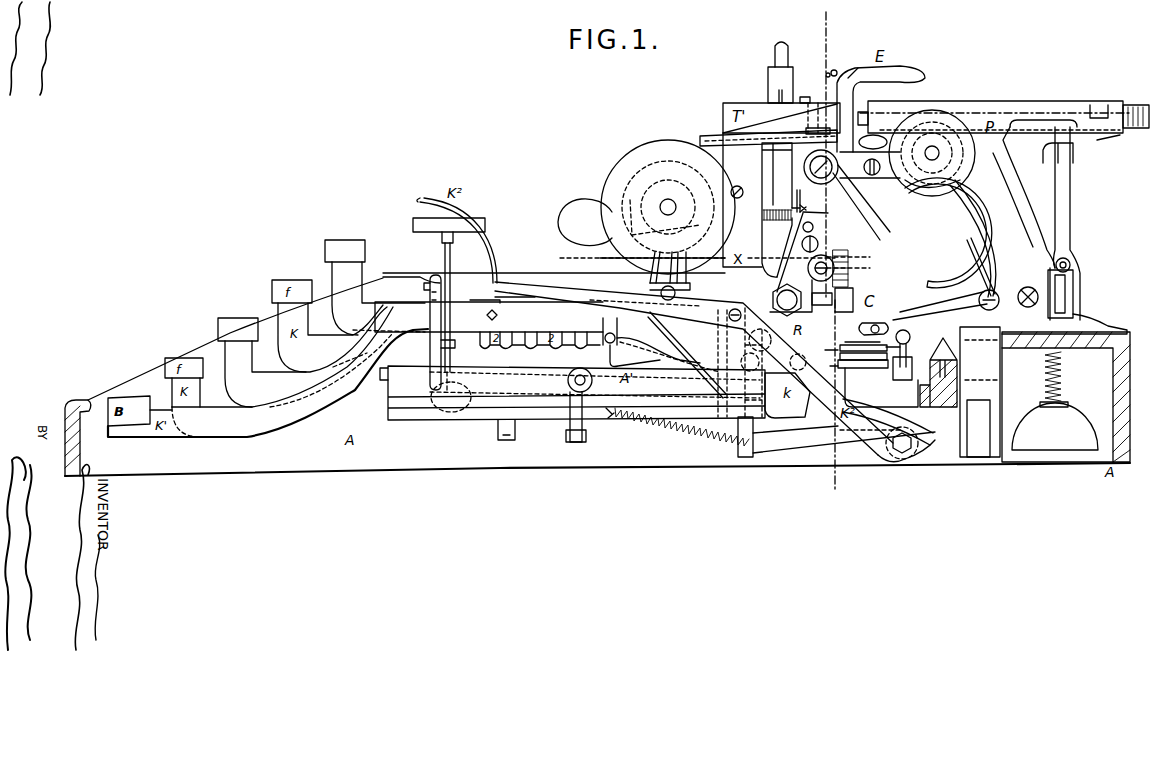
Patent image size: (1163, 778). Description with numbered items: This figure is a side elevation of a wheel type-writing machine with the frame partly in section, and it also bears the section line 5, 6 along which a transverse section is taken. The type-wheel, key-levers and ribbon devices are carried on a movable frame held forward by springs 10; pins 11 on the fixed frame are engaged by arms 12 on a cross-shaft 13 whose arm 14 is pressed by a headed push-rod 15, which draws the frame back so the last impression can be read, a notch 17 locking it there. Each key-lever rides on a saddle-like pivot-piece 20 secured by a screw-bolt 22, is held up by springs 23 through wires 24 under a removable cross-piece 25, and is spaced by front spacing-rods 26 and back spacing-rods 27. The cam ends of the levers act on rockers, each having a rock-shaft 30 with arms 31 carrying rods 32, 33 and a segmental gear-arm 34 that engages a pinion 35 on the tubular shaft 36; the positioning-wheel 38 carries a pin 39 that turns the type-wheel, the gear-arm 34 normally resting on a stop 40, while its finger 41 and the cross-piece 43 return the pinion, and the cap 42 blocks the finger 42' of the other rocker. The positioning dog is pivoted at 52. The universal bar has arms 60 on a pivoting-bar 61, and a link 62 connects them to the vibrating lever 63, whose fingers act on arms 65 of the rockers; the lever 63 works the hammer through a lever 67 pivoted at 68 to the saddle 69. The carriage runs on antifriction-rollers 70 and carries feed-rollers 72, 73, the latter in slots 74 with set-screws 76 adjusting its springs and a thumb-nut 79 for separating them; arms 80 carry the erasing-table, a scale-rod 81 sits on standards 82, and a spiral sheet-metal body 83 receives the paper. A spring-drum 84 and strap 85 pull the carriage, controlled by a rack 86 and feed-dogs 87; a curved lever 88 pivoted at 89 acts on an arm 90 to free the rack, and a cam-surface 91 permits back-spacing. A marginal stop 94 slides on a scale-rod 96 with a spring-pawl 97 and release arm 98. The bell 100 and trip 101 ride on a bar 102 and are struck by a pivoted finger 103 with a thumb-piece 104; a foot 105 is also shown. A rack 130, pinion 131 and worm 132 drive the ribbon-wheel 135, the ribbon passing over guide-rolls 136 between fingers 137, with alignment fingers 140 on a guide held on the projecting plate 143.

The section line 5 6 5 is at (826, 15).
The section line 5 6 is at (835, 486).
The springs 10 is at (677, 428).
The pins 11 is at (582, 441).
The arms 12 is at (577, 417).
The cross-shaft 13 is at (580, 380).
The arm 14 is at (572, 393).
The push-rod 15 is at (450, 357).
The notch 17 is at (432, 346).
The pivot-piece 20 is at (502, 293).
The screw-bolt 22 is at (500, 315).
The springs 23 is at (516, 434).
The wires 24 is at (659, 355).
The cross-piece 25 is at (428, 282).
The front spacing-rods 26 is at (432, 317).
The back spacing-rods 27 is at (731, 362).
The rock-shaft 30 is at (787, 300).
The arms 31 is at (759, 320).
The rod 32 is at (805, 361).
The rod 33 is at (756, 343).
The segmental gear-arm 34 is at (818, 237).
The pinion 35 is at (777, 222).
The tubular shaft 36 is at (783, 223).
The positioning-wheel 38 is at (777, 210).
The pin 39 is at (780, 72).
The stop 40 is at (823, 262).
The finger 41 is at (802, 197).
The cap or segmental plate 42 is at (788, 202).
The laterally-projecting finger 42' is at (817, 214).
The cross-piece 43 is at (809, 205).
The pivot 52 is at (742, 186).
The arms 60 is at (687, 355).
The pivoting-bar 61 is at (612, 328).
The link 62 is at (754, 437).
The vibrating lever 63 is at (844, 439).
The arms 65 is at (801, 296).
The lever 67 is at (1045, 235).
The pivot 68 is at (1070, 264).
The saddle 69 is at (1080, 275).
The antifriction-rollers 70 is at (926, 372).
The front feed-roller 72 is at (821, 175).
The feed-roller 73 is at (900, 173).
The slots 74 is at (873, 142).
The set-screws 76 is at (1043, 153).
The thumb-nut 79 is at (932, 153).
The arms 80 is at (881, 109).
The scale-rod 81 is at (848, 66).
The standards 82 is at (825, 71).
The sheet-metal body 83 is at (940, 233).
The spring-drum 84 is at (1038, 391).
The strap 85 is at (973, 238).
The rack 86 is at (911, 348).
The feed-dogs 87 is at (881, 382).
The curved lever 88 is at (940, 306).
The pivot 89 is at (983, 293).
The arm 90 is at (866, 329).
The cam-surface 91 is at (714, 368).
The marginal stop 94 is at (831, 344).
The scale-rod 96 is at (863, 363).
The spring-pawl 97 is at (836, 368).
The arm 98 is at (857, 336).
The bell 100 is at (1066, 397).
The bell-trip 101 is at (1073, 300).
The bar 102 is at (997, 390).
The projecting finger 103 is at (1033, 291).
The thumb-piece 104 is at (970, 267).
The foot 105 is at (1064, 323).
The rack 130 is at (849, 300).
The pinion 131 is at (857, 267).
The worm 132 is at (656, 276).
The ribbon-wheel 135 is at (668, 207).
The guide-rolls 136 is at (802, 90).
The fingers 137 is at (819, 118).
The fingers 140 is at (818, 125).
The projecting plate 143 is at (767, 133).